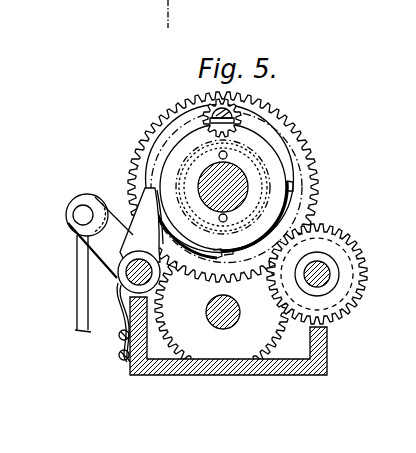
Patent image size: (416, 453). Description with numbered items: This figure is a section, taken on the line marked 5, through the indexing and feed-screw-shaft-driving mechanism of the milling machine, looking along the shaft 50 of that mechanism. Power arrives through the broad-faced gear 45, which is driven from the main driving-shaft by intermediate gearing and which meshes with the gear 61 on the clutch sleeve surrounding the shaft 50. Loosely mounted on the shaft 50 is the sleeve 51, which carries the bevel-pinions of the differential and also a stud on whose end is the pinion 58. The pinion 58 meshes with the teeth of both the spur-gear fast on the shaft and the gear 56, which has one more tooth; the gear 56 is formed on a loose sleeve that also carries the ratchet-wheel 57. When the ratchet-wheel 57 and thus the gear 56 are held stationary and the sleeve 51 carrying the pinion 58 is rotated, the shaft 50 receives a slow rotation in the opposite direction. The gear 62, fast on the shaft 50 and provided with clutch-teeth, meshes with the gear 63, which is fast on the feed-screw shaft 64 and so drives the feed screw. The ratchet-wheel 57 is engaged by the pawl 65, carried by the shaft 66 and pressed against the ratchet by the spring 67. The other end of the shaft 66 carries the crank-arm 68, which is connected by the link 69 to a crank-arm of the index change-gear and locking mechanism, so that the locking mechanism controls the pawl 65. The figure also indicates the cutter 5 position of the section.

The cutter 5 is at (167, 26).
The broad-faced gear 45 is at (357, 258).
The shaft 50 is at (197, 177).
The sleeve 51 is at (181, 112).
The gear 56 is at (265, 177).
The ratchet-wheel 57 is at (293, 199).
The pinion 58 is at (238, 110).
The gear 61 is at (285, 143).
The gear 62 is at (200, 178).
The gear 63 is at (222, 306).
The feed-screw shaft 64 is at (234, 322).
The pawl 65 is at (137, 233).
The shaft 66 is at (128, 276).
The spring 67 is at (119, 308).
The crank-arm 68 is at (84, 226).
The link 69 is at (82, 275).